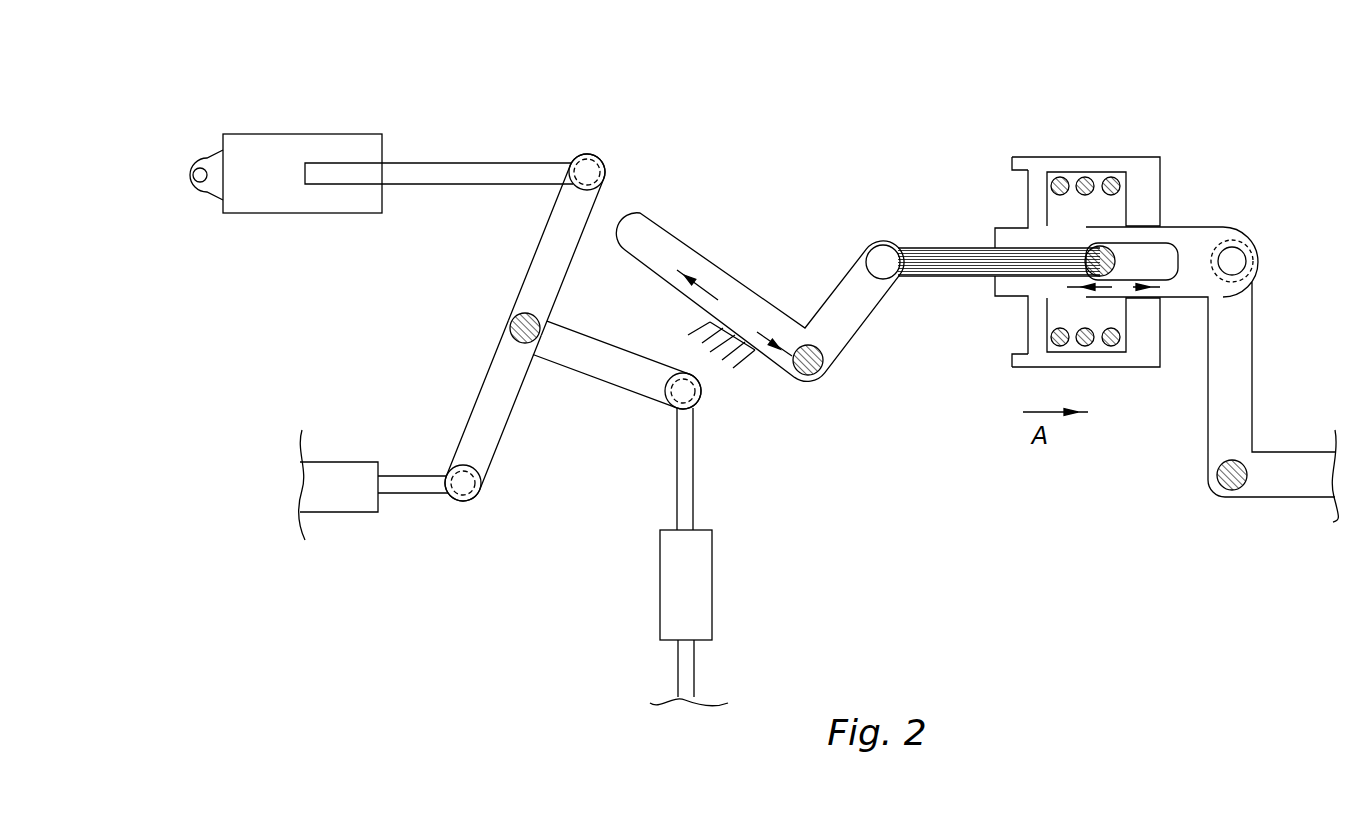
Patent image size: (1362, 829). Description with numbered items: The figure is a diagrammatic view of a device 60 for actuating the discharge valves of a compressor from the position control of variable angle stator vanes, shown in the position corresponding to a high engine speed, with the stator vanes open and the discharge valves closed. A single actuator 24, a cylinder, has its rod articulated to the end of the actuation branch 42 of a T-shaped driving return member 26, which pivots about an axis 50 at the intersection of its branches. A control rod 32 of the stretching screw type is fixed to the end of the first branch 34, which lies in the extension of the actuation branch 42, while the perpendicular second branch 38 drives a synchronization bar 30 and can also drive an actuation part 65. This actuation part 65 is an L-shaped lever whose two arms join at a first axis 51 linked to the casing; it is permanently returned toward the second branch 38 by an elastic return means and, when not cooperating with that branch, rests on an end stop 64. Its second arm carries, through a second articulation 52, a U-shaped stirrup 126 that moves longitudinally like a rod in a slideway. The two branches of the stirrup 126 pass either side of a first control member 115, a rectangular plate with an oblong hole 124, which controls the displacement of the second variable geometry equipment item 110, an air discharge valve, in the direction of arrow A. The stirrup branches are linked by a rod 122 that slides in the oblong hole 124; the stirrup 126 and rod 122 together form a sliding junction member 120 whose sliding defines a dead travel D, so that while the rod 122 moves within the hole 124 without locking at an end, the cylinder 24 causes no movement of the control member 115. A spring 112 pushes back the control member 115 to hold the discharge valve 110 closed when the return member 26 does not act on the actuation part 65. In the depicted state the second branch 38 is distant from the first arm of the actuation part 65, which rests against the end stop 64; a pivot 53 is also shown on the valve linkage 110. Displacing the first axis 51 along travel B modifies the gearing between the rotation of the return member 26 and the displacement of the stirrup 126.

The actuator 24 is at (381, 173).
The driving return member 26 is at (425, 351).
The synchronization bar 30 is at (680, 578).
The control rod 32 is at (345, 493).
The first branch 34 is at (497, 407).
The second branch 38 is at (604, 365).
The actuation branch 42 is at (557, 245).
The axis 50 is at (520, 325).
The first axis 51 is at (812, 365).
The second articulation 52 is at (877, 257).
The link pivot 53 is at (1232, 262).
The device for actuating discharge valves 60 is at (756, 214).
The end stop 64 is at (733, 370).
The actuation part 65 is at (652, 234).
The second variable geometry equipment item 110 is at (1225, 353).
The spring 112 is at (1113, 177).
The first control member 115 is at (1007, 223).
The sliding junction member 120 is at (1028, 110).
The rod 122 is at (1110, 258).
The oblong hole 124 is at (1160, 260).
The stirrup 126 is at (928, 277).